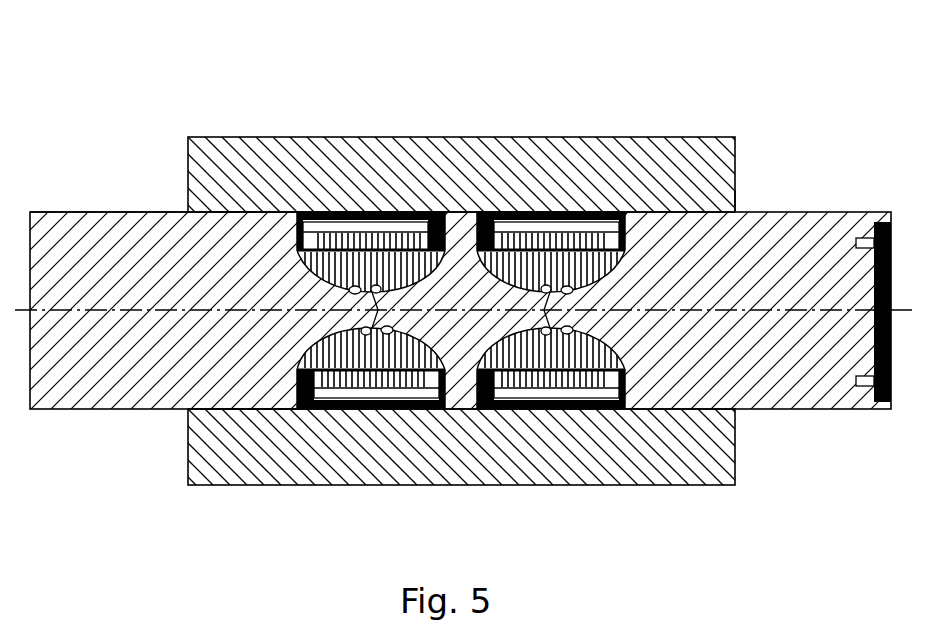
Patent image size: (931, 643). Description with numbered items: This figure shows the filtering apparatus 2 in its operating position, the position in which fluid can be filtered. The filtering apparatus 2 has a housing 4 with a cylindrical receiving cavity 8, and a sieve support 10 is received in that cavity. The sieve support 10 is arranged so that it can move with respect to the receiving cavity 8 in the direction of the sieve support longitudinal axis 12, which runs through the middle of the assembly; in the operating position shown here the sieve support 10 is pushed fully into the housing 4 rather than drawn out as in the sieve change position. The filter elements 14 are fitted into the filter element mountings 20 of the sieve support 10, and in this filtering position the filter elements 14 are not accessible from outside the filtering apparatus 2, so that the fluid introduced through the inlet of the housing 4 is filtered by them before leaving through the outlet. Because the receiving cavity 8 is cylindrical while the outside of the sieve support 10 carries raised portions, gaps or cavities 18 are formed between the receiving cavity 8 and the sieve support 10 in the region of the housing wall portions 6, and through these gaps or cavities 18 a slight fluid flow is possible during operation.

The filtering apparatus 2 is at (130, 112).
The housing 4 is at (668, 172).
The housing wall portions 6 is at (222, 210).
The receiving cavity 8 is at (748, 205).
The sieve support 10 is at (800, 255).
The sieve support longitudinal axis 12 is at (58, 313).
The filter elements 14 is at (325, 245).
The gaps or cavities 18 is at (268, 410).
The filter element mountings 20 is at (460, 305).